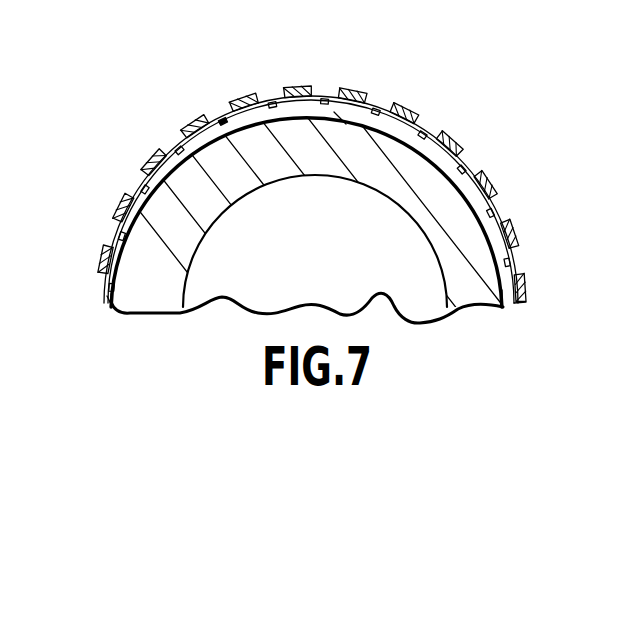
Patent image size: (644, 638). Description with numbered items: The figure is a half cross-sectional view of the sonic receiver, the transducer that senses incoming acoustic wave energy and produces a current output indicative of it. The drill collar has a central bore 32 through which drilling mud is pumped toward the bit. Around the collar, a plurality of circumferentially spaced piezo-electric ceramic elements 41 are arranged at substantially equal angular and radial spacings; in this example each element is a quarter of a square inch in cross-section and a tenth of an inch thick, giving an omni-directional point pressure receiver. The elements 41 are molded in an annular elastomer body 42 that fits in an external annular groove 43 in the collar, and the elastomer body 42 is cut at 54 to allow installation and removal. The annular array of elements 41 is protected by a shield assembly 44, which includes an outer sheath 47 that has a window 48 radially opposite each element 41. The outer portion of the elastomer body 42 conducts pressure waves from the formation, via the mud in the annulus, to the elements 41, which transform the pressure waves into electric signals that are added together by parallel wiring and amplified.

The central bore 32 is at (344, 263).
The piezo-electric ceramic elements 41 is at (147, 186).
The annular elastomer body 42 is at (493, 206).
The external annular groove 43 is at (224, 123).
The shield assembly 44 is at (535, 278).
The outer sheath 47 is at (103, 264).
The window 48 is at (173, 147).
The cut 54 is at (340, 119).